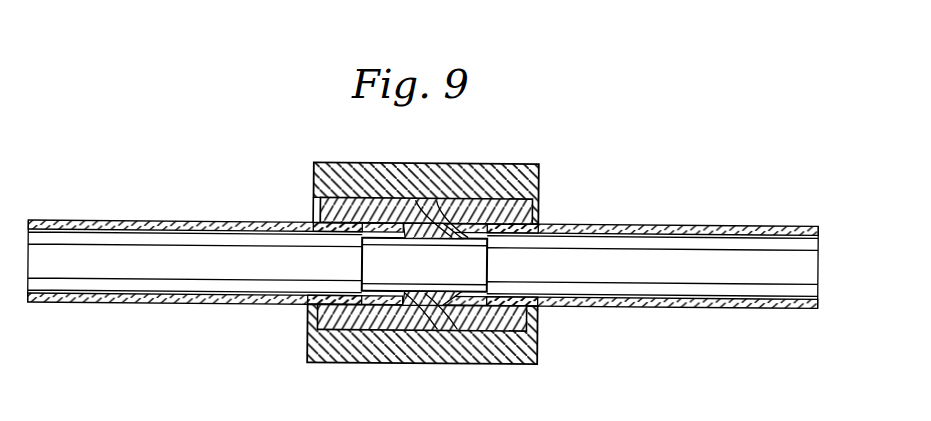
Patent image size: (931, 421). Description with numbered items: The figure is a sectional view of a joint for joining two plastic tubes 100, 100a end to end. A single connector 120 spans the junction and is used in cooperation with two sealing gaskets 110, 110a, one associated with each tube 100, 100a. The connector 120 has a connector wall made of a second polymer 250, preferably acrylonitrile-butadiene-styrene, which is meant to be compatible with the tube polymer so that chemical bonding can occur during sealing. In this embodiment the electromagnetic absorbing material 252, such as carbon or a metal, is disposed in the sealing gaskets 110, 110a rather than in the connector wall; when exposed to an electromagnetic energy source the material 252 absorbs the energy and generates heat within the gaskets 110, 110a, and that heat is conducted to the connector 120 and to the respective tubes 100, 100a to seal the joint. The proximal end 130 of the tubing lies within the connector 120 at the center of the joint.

The tube 100 is at (684, 224).
The tube 100a is at (161, 306).
The sealing gasket 110 is at (536, 322).
The sealing gasket 110a is at (316, 208).
The connector 120 is at (398, 163).
The proximal end 130 is at (411, 332).
The second polymer 250 is at (503, 192).
The electromagnetic absorbing material 252 is at (541, 204).